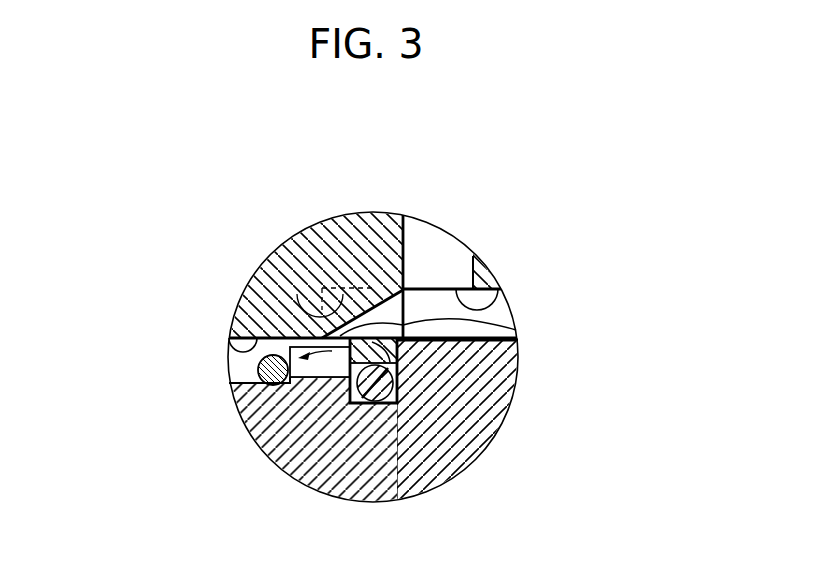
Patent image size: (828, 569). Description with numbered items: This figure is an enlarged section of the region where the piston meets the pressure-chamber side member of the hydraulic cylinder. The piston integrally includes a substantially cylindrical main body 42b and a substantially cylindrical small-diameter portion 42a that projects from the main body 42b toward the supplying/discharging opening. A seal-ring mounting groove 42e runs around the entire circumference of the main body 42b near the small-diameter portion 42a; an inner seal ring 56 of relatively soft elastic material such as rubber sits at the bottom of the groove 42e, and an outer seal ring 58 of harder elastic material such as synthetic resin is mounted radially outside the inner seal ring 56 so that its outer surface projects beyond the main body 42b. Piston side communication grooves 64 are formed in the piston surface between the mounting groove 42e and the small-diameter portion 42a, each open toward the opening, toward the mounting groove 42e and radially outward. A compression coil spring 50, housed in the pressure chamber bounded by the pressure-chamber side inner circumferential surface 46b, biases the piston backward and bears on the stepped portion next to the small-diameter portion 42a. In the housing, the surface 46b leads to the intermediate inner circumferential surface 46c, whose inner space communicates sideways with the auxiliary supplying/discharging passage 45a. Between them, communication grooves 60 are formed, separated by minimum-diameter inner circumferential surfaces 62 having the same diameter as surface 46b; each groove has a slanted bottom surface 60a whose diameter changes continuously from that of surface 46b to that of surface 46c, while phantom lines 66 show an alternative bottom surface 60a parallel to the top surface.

The phantom lines 66 is at (300, 292).
The bottom surface 60a is at (378, 340).
The inner circumferential surface 62 is at (367, 318).
The auxiliary supplying/discharging passage 45a is at (437, 245).
The intermediate inner circumferential surface 46c is at (500, 300).
The communication groove 60 is at (517, 330).
The main body 42b is at (490, 403).
The outer seal ring 58 is at (402, 348).
The seal-ring mounting groove 42e is at (357, 403).
The inner seal ring 56 is at (350, 385).
The piston side communication groove 64 is at (315, 365).
The compression coil spring 50 is at (258, 364).
The small-diameter portion 42a is at (257, 396).
The pressure-chamber side inner circumferential surface 46b is at (230, 350).